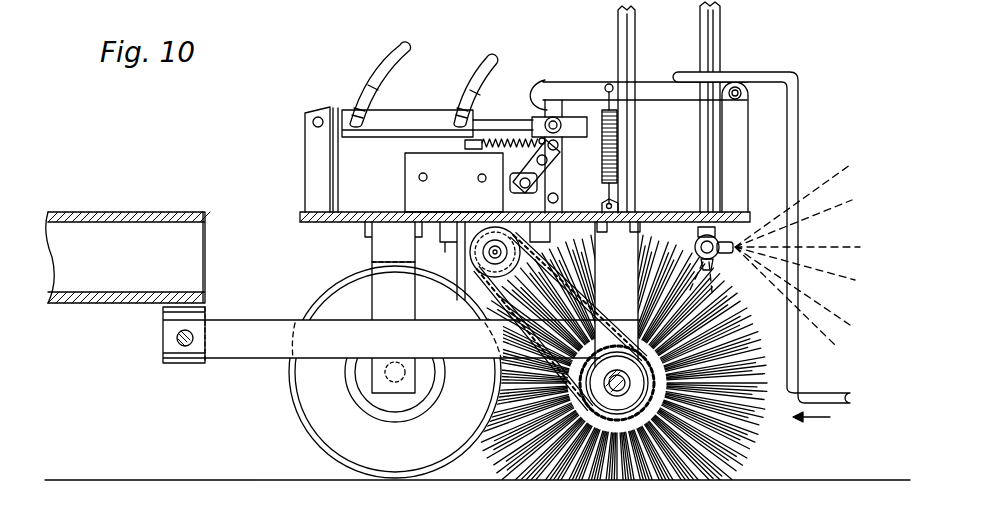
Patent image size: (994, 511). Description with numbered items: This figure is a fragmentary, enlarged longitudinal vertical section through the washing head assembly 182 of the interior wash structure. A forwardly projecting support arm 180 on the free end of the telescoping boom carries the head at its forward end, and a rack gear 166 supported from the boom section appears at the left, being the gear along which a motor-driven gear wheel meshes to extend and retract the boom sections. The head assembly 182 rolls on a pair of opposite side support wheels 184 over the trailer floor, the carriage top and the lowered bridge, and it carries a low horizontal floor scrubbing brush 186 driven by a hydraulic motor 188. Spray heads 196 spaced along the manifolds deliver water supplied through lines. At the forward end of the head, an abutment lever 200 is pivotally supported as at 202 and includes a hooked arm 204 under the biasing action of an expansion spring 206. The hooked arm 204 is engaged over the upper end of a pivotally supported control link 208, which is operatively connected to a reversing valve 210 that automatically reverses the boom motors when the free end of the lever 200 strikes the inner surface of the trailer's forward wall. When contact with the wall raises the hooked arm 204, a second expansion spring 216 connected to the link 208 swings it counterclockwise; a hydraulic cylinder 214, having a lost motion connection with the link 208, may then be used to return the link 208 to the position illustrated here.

The rack gear 166 is at (143, 213).
The support arm 180 is at (253, 343).
The washing head assembly 182 is at (727, 62).
The support wheels 184 is at (313, 418).
The floor scrubbing brush 186 is at (693, 423).
The hydraulic motor 188 is at (430, 278).
The spray heads 196 is at (742, 242).
The abutment lever 200 is at (855, 396).
The pivot 202 is at (750, 92).
The hooked arm 204 is at (542, 95).
The expansion spring 206 is at (618, 142).
The control link 208 is at (553, 177).
The reversing valve 210 is at (415, 192).
The hydraulic cylinder 214 is at (402, 120).
The expansion spring 216 is at (500, 138).